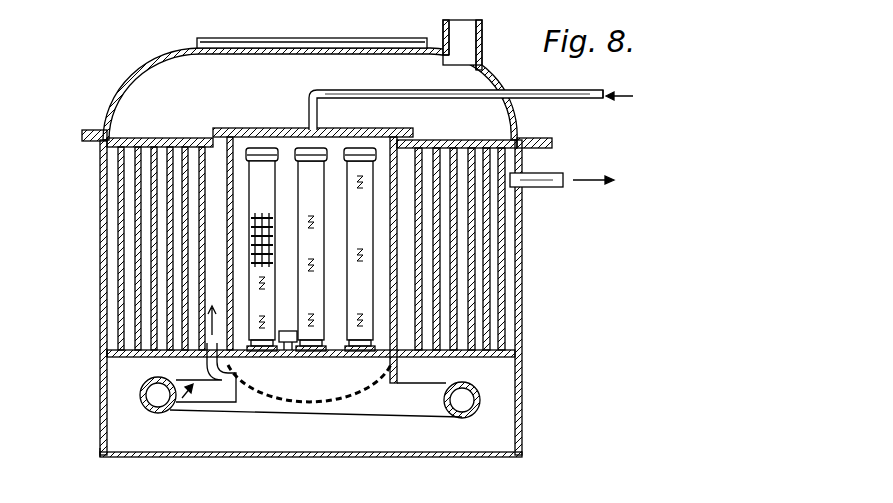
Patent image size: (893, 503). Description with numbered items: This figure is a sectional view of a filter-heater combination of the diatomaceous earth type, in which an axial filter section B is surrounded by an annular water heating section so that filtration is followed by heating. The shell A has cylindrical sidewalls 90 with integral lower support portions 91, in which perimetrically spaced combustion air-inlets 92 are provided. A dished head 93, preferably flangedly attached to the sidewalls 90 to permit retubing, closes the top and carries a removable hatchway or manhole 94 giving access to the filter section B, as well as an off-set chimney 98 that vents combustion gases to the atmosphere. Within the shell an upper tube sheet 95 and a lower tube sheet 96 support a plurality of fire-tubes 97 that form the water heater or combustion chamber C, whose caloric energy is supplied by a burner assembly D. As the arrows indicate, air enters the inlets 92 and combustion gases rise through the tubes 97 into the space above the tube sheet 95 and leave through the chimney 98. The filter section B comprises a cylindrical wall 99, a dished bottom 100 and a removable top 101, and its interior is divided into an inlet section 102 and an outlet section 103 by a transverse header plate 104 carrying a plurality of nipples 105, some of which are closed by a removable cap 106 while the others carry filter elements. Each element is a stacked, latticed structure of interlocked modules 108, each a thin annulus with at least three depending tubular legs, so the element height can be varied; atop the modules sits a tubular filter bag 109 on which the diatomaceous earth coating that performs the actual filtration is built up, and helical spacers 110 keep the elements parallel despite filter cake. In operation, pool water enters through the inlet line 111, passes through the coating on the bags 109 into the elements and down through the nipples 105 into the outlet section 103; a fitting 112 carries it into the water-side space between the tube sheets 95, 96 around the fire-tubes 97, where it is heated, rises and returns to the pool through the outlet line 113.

The cylindrical sidewalls 90 is at (102, 207).
The lower support portions 91 is at (100, 437).
The combustion air-inlets 92 is at (122, 385).
The dished head 93 is at (131, 72).
The removable hatchway or manhole 94 is at (347, 37).
The upper tube sheet 95 is at (172, 110).
The lower tube sheet 96 is at (104, 357).
The fire-tubes 97 is at (498, 313).
The off-set chimney 98 is at (484, 38).
The cylindrical wall 99 is at (395, 213).
The dished bottom 100 is at (262, 398).
The removable top 101 is at (354, 128).
The inlet section 102 is at (353, 222).
The outlet section 103 is at (338, 362).
The transverse header plate 104 is at (381, 345).
The nipples 105 is at (290, 355).
The cap 106 is at (297, 350).
The modules 108 is at (267, 208).
The tubular filter bag 109 is at (276, 192).
The helical spacers 110 is at (267, 148).
The inlet line 111 is at (548, 101).
The fitting 112 is at (184, 406).
The outlet line 113 is at (554, 175).
The shell A is at (94, 254).
The filter section B is at (380, 281).
The water heater or combustion chamber C is at (512, 371).
The burner assembly D is at (220, 373).